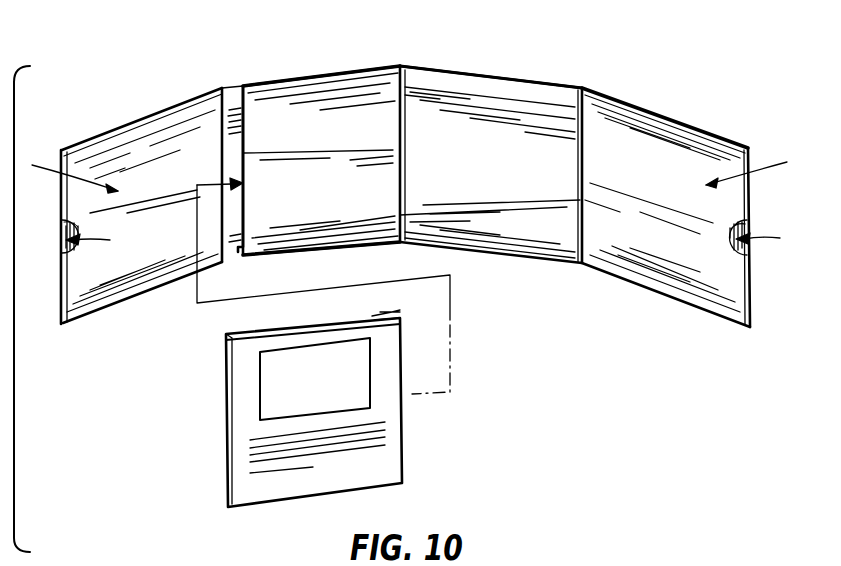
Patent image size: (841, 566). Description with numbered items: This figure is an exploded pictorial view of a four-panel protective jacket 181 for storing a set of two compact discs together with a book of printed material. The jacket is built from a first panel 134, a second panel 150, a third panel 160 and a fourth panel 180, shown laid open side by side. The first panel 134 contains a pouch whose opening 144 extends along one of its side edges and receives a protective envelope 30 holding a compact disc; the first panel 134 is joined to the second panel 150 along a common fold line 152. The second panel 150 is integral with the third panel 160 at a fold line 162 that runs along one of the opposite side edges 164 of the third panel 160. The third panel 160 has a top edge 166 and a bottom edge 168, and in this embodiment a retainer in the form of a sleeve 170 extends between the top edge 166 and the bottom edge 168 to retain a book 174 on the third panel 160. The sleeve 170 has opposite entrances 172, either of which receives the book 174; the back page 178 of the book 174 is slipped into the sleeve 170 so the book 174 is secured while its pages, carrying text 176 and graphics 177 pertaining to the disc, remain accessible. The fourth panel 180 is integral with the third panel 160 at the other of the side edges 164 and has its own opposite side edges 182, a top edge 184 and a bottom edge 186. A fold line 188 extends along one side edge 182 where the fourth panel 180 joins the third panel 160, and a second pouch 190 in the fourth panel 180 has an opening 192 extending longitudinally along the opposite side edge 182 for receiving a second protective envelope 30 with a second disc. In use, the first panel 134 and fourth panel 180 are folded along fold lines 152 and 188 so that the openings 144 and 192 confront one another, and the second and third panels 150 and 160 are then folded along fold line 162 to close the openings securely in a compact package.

The protective envelope 30 is at (441, 240).
The first panel 134 is at (650, 123).
The opening 144 is at (754, 208).
The second panel 150 is at (512, 98).
The fold line 152 is at (587, 162).
The third panel 160 is at (310, 58).
The fold line 162 is at (407, 187).
The opposite side edges 164 is at (220, 122).
The top edge 166 is at (360, 70).
The bottom edge 168 is at (292, 255).
The sleeve 170 is at (334, 240).
The entrances 172 is at (236, 212).
The book 174 is at (390, 469).
The text 176 is at (255, 455).
The graphics 177 is at (270, 392).
The back page 178 is at (373, 312).
The fourth panel 180 is at (110, 310).
The protective jacket 181 is at (478, 35).
The opposite side edges 182 is at (54, 272).
The top edge 184 is at (103, 133).
The bottom edge 186 is at (148, 297).
The fold line 188 is at (222, 163).
The second pouch 190 is at (63, 222).
The opening 192 is at (42, 237).